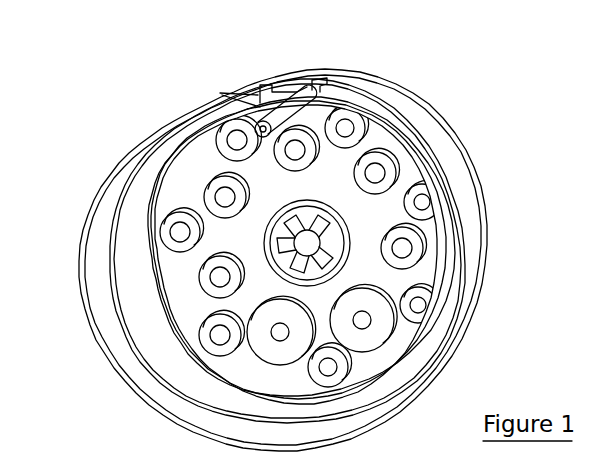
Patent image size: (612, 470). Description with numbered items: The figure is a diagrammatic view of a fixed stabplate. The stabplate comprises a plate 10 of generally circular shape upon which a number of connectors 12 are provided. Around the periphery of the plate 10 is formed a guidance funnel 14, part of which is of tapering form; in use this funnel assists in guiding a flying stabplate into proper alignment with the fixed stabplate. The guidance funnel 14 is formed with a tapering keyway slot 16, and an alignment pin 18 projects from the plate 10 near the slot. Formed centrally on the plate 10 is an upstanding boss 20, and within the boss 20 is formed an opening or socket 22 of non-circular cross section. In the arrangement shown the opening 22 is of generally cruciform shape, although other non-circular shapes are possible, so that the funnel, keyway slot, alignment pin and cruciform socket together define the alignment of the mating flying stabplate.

The plate 10 is at (183, 287).
The connectors 12 is at (317, 375).
The guidance funnel 14 is at (472, 268).
The keyway slot 16 is at (291, 113).
The alignment pin 18 is at (317, 87).
The boss 20 is at (330, 244).
The opening or socket 22 is at (333, 222).